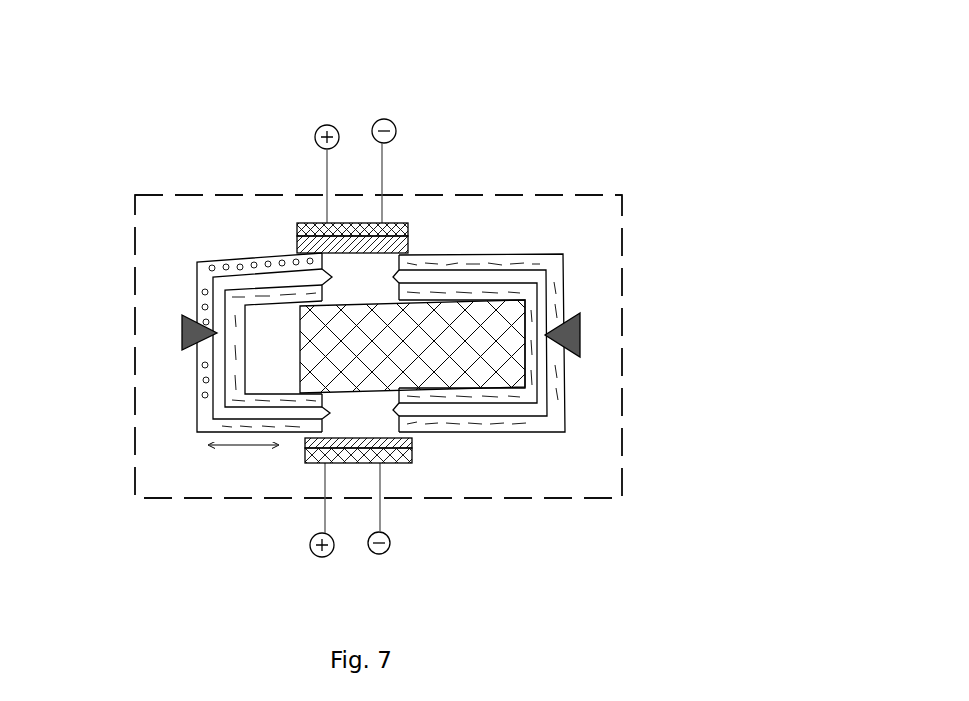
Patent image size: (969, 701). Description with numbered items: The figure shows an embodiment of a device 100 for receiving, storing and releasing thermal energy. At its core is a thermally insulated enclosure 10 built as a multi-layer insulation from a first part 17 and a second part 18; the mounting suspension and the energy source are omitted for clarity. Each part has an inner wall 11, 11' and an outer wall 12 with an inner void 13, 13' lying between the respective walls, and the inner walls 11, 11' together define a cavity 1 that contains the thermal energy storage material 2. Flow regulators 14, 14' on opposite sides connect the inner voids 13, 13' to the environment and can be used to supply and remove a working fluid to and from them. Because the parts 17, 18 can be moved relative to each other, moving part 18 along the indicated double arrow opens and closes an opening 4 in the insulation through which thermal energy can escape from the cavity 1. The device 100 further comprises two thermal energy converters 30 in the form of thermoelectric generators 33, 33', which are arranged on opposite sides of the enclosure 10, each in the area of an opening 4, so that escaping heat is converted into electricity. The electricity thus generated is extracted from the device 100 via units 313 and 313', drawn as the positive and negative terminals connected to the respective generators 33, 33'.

The device for receiving, storing and releasing thermal energy 100 is at (160, 126).
The thermally insulated enclosure 10 is at (473, 225).
The thermal energy converter 30 is at (360, 105).
The unit 313 is at (301, 138).
The unit 313' is at (262, 532).
The thermoelectric generator 33 is at (373, 186).
The thermoelectric generator 33' is at (366, 525).
The second part 18 is at (270, 258).
The first part 17 is at (560, 252).
The outer wall 12 is at (560, 398).
The opening 4 is at (353, 288).
The inner void 13 is at (512, 411).
The inner void 13' is at (232, 418).
The inner wall 11 is at (485, 416).
The inner wall 11' is at (254, 422).
The cavity 1 is at (272, 373).
The thermal energy storage material 2 is at (445, 348).
The flow regulator 14 is at (623, 310).
The flow regulator 14' is at (130, 329).